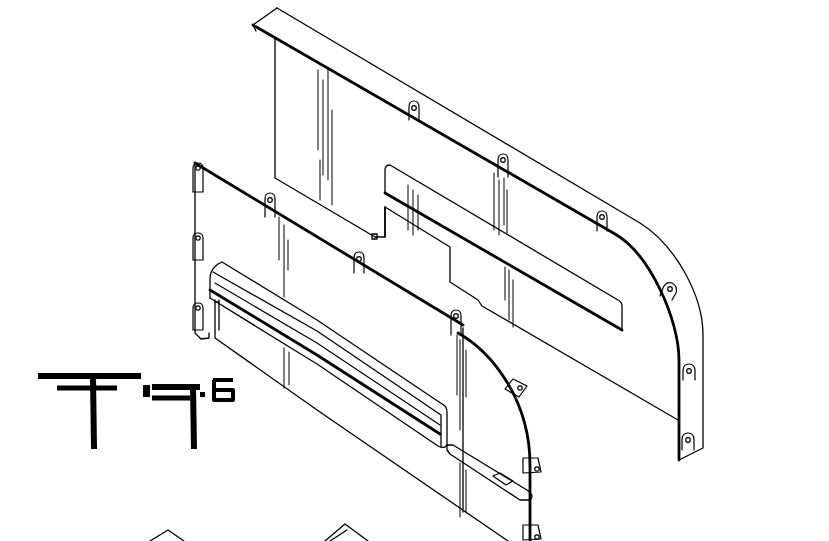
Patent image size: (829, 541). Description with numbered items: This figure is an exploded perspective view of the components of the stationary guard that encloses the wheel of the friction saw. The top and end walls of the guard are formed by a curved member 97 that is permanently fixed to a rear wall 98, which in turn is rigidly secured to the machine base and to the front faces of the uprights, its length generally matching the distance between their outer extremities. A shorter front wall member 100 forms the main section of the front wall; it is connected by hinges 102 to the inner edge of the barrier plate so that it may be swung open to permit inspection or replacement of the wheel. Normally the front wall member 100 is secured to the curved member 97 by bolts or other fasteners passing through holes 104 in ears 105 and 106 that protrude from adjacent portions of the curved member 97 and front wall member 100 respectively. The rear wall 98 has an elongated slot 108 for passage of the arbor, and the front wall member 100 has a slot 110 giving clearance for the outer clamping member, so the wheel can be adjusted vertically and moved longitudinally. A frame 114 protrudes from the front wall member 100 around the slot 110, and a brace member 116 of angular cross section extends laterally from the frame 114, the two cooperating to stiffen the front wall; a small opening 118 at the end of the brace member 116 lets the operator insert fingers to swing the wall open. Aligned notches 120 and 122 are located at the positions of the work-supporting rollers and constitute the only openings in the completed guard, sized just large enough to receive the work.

The curved member 97 is at (563, 181).
The rear wall 98 is at (278, 91).
The front wall member 100 is at (227, 191).
The hinges 102 is at (194, 180).
The holes 104 is at (425, 108).
The ears 105 is at (414, 104).
The ears 106 is at (461, 331).
The elongated slot 108 is at (593, 300).
The slot 110 is at (385, 383).
The frame 114 is at (296, 308).
The brace member 116 is at (449, 455).
The small opening 118 is at (506, 483).
The notch 120 is at (390, 237).
The notch 122 is at (221, 331).